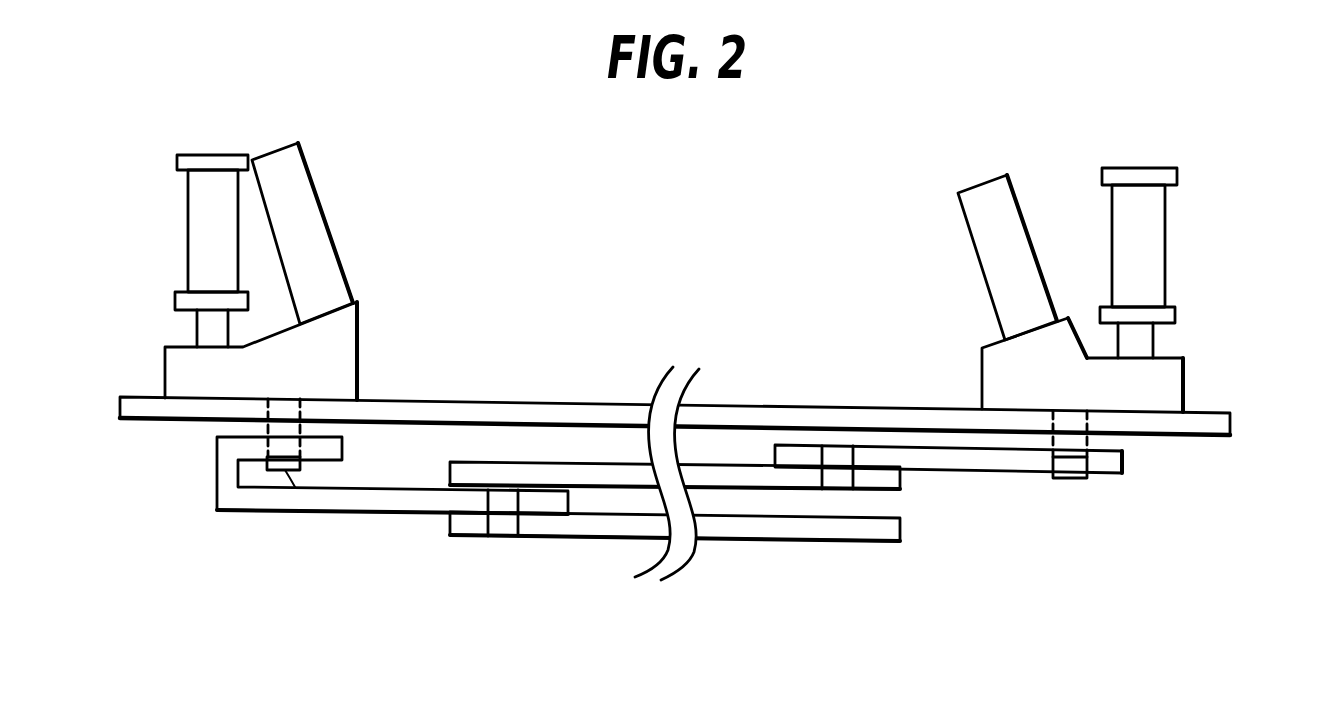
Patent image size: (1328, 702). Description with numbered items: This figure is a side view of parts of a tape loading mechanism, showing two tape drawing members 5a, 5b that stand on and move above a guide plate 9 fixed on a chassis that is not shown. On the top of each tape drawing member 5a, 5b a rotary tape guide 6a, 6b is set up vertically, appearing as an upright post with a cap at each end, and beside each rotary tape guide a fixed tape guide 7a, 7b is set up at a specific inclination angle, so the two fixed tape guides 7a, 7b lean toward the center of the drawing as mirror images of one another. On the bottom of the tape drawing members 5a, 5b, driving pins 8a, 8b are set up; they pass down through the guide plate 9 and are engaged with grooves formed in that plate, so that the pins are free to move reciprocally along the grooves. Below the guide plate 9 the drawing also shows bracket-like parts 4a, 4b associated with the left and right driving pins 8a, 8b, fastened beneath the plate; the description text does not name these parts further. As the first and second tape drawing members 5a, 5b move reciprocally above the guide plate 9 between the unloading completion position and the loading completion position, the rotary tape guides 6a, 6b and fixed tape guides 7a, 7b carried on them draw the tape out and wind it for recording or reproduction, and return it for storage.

The left holding bracket 4a is at (215, 488).
The right holding bracket 4b is at (1123, 457).
The first tape drawing member 5a is at (363, 330).
The second tape drawing member 5b is at (980, 392).
The rotary tape guide 6a is at (183, 154).
The rotary tape guide 6b is at (1153, 168).
The fixed tape guide 7a is at (287, 145).
The fixed tape guide 7b is at (977, 180).
The driving pin 8a is at (285, 512).
The driving pin 8b is at (1075, 480).
The guide plate 9 is at (1230, 423).